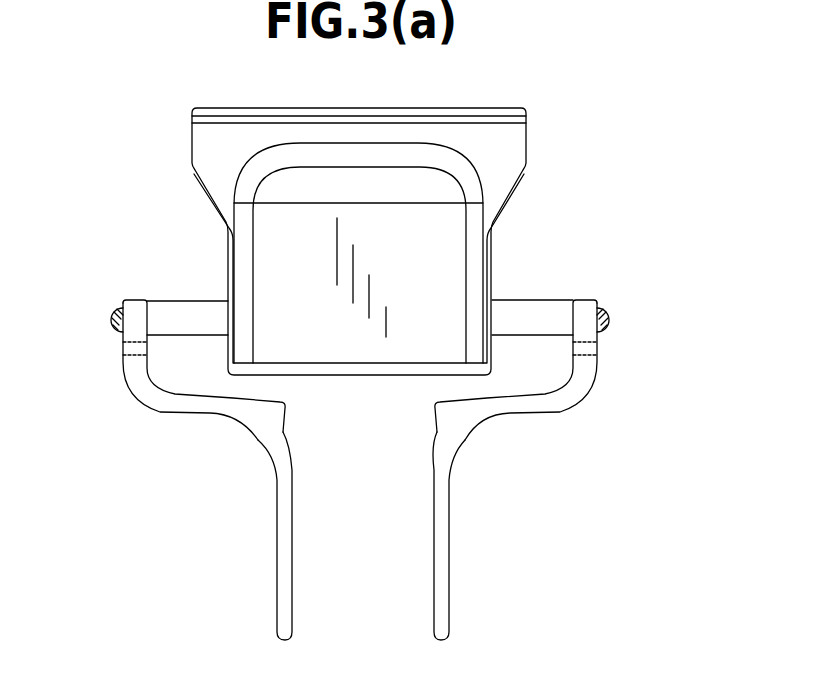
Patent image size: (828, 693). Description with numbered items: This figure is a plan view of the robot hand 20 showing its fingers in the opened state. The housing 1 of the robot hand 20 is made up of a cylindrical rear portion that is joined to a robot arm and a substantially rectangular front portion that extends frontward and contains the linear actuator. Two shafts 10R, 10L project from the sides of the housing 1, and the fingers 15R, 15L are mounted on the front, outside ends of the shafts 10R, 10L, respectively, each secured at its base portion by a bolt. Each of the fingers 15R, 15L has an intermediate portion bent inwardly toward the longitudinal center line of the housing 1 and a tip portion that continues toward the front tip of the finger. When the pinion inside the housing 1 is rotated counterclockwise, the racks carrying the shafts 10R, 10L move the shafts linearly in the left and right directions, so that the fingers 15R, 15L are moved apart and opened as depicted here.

The housing 1 is at (372, 357).
The robot hand 20 is at (548, 115).
The shaft 10R is at (186, 300).
The shaft 10L is at (522, 296).
The finger 15R is at (276, 586).
The finger 15L is at (449, 585).